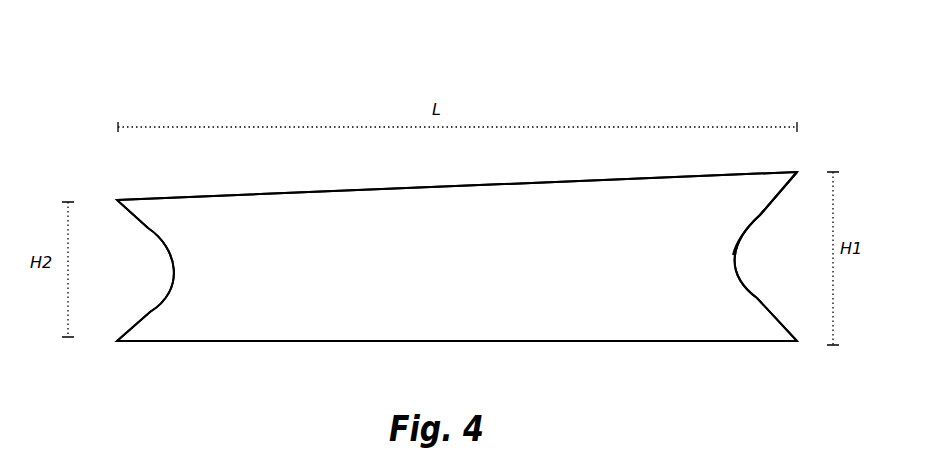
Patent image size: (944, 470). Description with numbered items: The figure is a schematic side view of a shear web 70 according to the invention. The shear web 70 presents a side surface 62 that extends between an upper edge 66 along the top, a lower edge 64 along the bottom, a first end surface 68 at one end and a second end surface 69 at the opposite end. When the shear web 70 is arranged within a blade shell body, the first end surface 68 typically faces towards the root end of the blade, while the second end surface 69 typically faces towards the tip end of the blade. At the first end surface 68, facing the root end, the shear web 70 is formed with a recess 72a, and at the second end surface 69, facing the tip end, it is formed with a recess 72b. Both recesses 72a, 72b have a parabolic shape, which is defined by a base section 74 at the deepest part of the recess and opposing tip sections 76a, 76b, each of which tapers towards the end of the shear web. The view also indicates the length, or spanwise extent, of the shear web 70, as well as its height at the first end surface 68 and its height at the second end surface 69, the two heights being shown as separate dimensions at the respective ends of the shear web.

The side surface 62 is at (457, 256).
The lower edge 64 is at (592, 341).
The upper edge 66 is at (243, 195).
The first end surface 68 is at (768, 260).
The second end surface 69 is at (128, 278).
The shear web 70 is at (100, 72).
The recess 72a is at (744, 292).
The recess 72b is at (170, 254).
The base section 74 is at (734, 253).
The tip section 76a is at (797, 172).
The tip section 76b is at (797, 341).